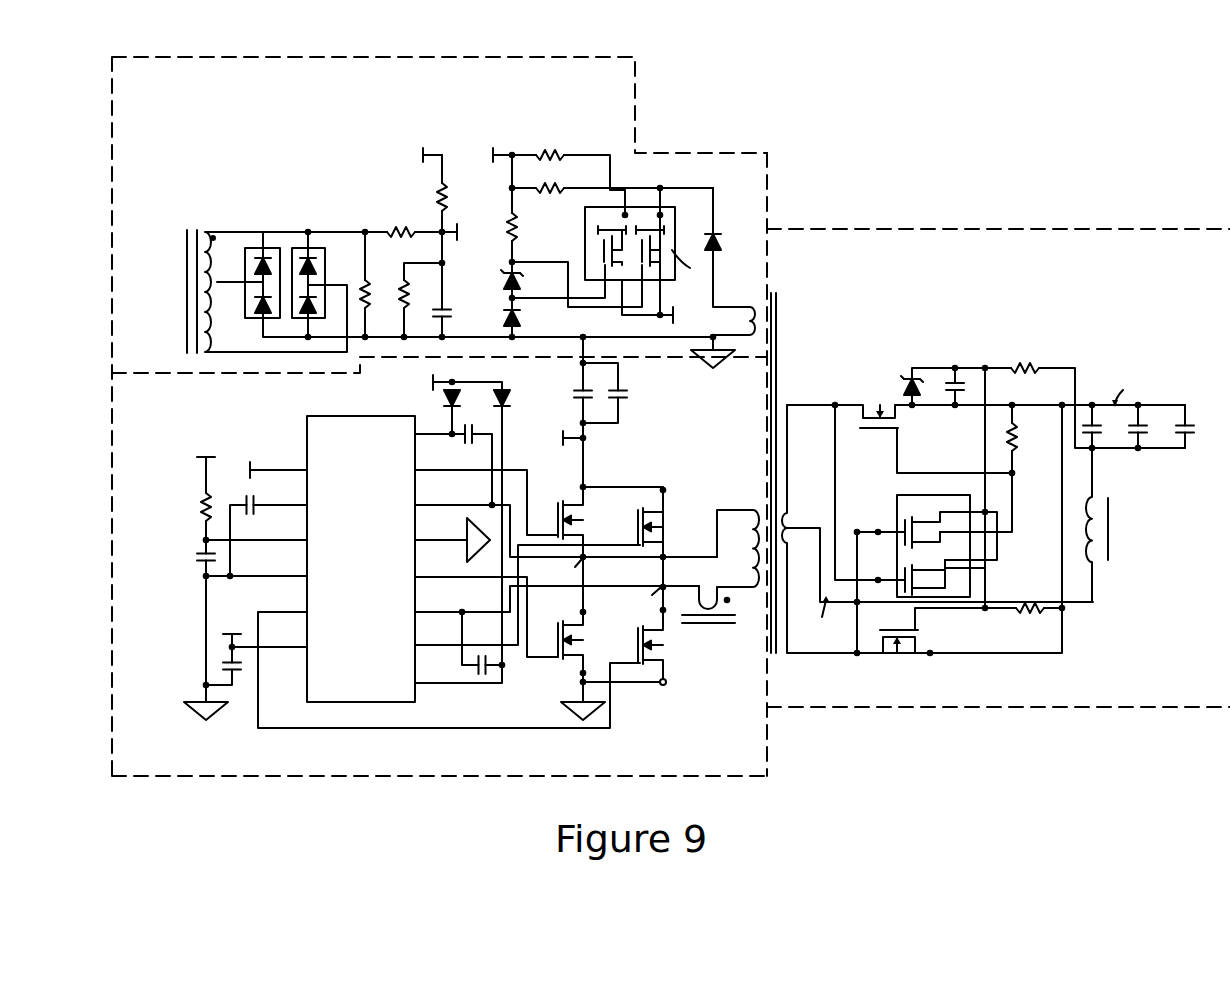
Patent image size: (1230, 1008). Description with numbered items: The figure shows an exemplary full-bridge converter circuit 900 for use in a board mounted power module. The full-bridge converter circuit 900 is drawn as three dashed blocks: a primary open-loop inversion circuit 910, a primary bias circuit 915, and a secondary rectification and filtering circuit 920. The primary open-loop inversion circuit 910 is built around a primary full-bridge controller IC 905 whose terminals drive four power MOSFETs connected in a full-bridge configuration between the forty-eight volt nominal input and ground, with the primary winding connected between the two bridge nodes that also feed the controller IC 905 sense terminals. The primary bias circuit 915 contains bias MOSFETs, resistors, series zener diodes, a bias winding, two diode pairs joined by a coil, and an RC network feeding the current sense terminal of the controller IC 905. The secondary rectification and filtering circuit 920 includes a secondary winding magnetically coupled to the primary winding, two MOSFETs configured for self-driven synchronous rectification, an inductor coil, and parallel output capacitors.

The full-bridge converter circuit 900 is at (742, 139).
The primary full-bridge controller IC 905 is at (331, 444).
The primary open-loop inversion circuit 910 is at (436, 754).
The primary bias circuit 915 is at (203, 84).
The secondary rectification and filtering circuit 920 is at (1096, 248).